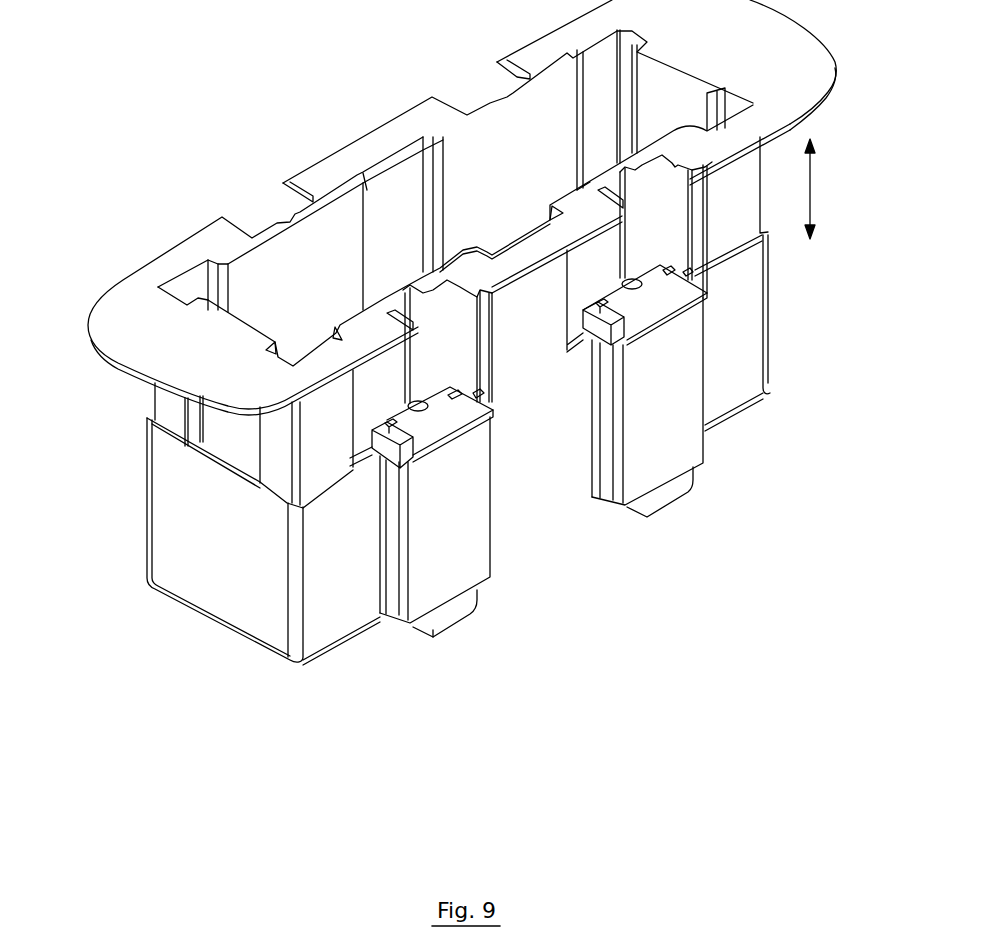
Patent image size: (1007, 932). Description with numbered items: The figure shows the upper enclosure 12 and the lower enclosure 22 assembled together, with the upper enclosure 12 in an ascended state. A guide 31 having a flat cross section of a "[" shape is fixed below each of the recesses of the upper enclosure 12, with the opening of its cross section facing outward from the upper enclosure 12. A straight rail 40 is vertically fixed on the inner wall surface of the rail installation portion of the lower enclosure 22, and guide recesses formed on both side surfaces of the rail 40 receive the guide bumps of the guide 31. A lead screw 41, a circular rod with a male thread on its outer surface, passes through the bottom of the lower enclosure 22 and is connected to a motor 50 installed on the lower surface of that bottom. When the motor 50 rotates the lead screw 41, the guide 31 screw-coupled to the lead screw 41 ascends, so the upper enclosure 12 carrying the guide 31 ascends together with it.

The upper enclosure 12 is at (163, 403).
The lower enclosure 22 is at (173, 470).
The guide 31 is at (382, 445).
The rail 40 is at (452, 430).
The lead screw 41 is at (408, 405).
The motor 50 is at (447, 613).